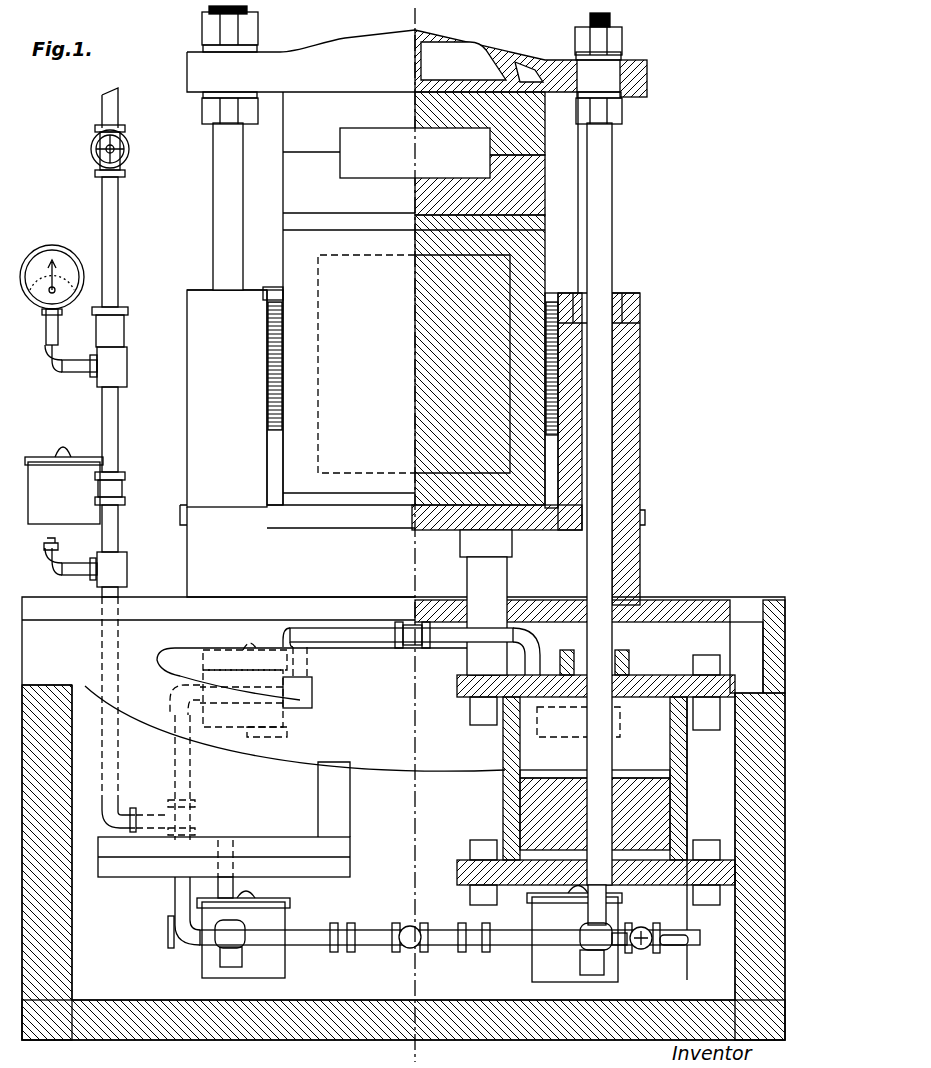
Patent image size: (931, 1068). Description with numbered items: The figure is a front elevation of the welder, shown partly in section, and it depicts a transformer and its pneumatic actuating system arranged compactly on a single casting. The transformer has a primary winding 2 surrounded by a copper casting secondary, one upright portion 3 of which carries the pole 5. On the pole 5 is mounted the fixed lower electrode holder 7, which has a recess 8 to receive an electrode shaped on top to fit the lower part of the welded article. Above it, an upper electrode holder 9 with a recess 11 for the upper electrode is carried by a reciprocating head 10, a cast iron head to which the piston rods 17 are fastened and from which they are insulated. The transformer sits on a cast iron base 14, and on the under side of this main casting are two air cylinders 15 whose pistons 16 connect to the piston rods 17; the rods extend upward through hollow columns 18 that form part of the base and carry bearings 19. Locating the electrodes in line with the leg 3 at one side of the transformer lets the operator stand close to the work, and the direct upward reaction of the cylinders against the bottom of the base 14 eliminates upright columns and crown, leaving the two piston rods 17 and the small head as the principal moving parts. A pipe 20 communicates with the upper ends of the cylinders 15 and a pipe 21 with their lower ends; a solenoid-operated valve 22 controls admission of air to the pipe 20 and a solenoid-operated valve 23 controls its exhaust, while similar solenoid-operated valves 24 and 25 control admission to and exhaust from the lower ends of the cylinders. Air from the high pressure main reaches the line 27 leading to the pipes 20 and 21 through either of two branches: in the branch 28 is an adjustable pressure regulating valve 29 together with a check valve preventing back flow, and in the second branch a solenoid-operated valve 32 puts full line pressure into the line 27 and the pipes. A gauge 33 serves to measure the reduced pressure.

The primary winding 2 is at (440, 16).
The upright portion 3 is at (470, 292).
The pole 5 is at (527, 237).
The fixed lower electrode holder 7 is at (480, 185).
The recess 8 is at (340, 167).
The upper electrode holder 9 is at (423, 118).
The reciprocating head 10 is at (452, 33).
The recess 11 is at (340, 148).
The cast iron base 14 is at (535, 533).
The air cylinder 15 is at (312, 772).
The piston 16 is at (505, 795).
The piston rod 17 is at (228, 176).
The hollow column 18 is at (200, 328).
The bearing 19 is at (190, 290).
The pipe 20 is at (455, 712).
The pipe 21 is at (372, 932).
The solenoid-operated valve 22 is at (237, 745).
The solenoid-operated valve 23 is at (605, 728).
The solenoid-operated valve 24 is at (290, 925).
The solenoid-operated valve 25 is at (620, 925).
The line 27 is at (118, 426).
The branch 28 is at (121, 247).
The adjustable pressure regulating valve 29 is at (120, 333).
The solenoid-operated valve 32 is at (64, 485).
The gauge 33 is at (50, 247).